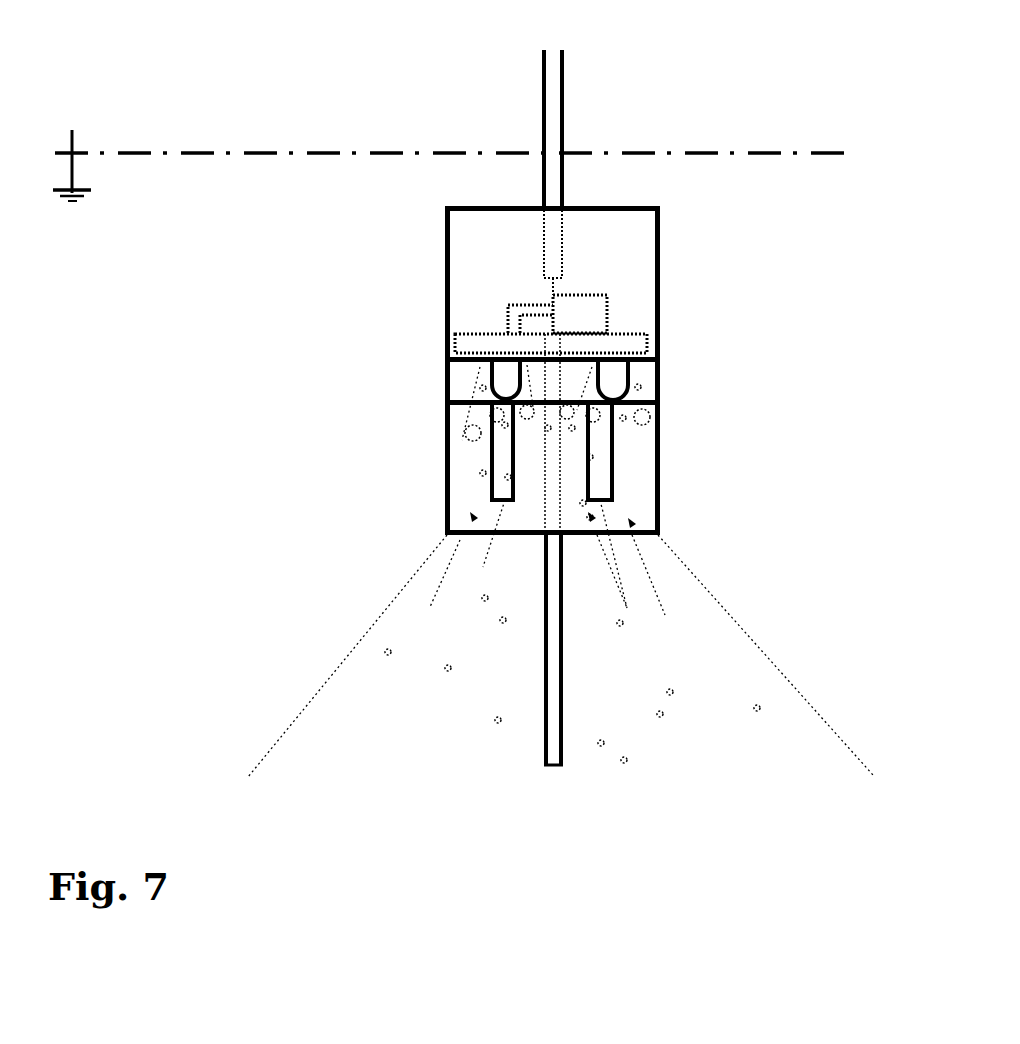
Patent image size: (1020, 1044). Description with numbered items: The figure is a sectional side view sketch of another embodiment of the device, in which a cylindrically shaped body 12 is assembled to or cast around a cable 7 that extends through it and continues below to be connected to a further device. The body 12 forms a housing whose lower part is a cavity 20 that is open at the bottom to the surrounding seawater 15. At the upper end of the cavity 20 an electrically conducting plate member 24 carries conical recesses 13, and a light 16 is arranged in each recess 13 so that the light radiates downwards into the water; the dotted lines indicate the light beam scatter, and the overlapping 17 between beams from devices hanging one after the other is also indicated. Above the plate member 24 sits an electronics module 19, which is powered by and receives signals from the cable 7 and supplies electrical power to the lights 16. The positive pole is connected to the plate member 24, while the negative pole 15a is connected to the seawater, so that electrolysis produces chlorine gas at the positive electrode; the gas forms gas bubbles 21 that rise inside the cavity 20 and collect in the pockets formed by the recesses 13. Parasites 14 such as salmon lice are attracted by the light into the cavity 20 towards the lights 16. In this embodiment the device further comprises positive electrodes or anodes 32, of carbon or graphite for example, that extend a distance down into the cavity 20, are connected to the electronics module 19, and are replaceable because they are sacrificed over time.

The cable 7 is at (564, 67).
The body 12 is at (488, 366).
The recess 13 is at (477, 380).
The parasites 14 is at (608, 588).
The seawater 15 is at (106, 362).
The negative pole 15a is at (56, 180).
The lights 16 is at (532, 352).
The overlapping between light beams 17 is at (547, 656).
The electronics module 19 is at (613, 305).
The cavity 20 is at (541, 524).
The gas bubbles 21 is at (631, 437).
The plate member 24 is at (521, 438).
The positive electrodes (anodes) 32 is at (568, 463).